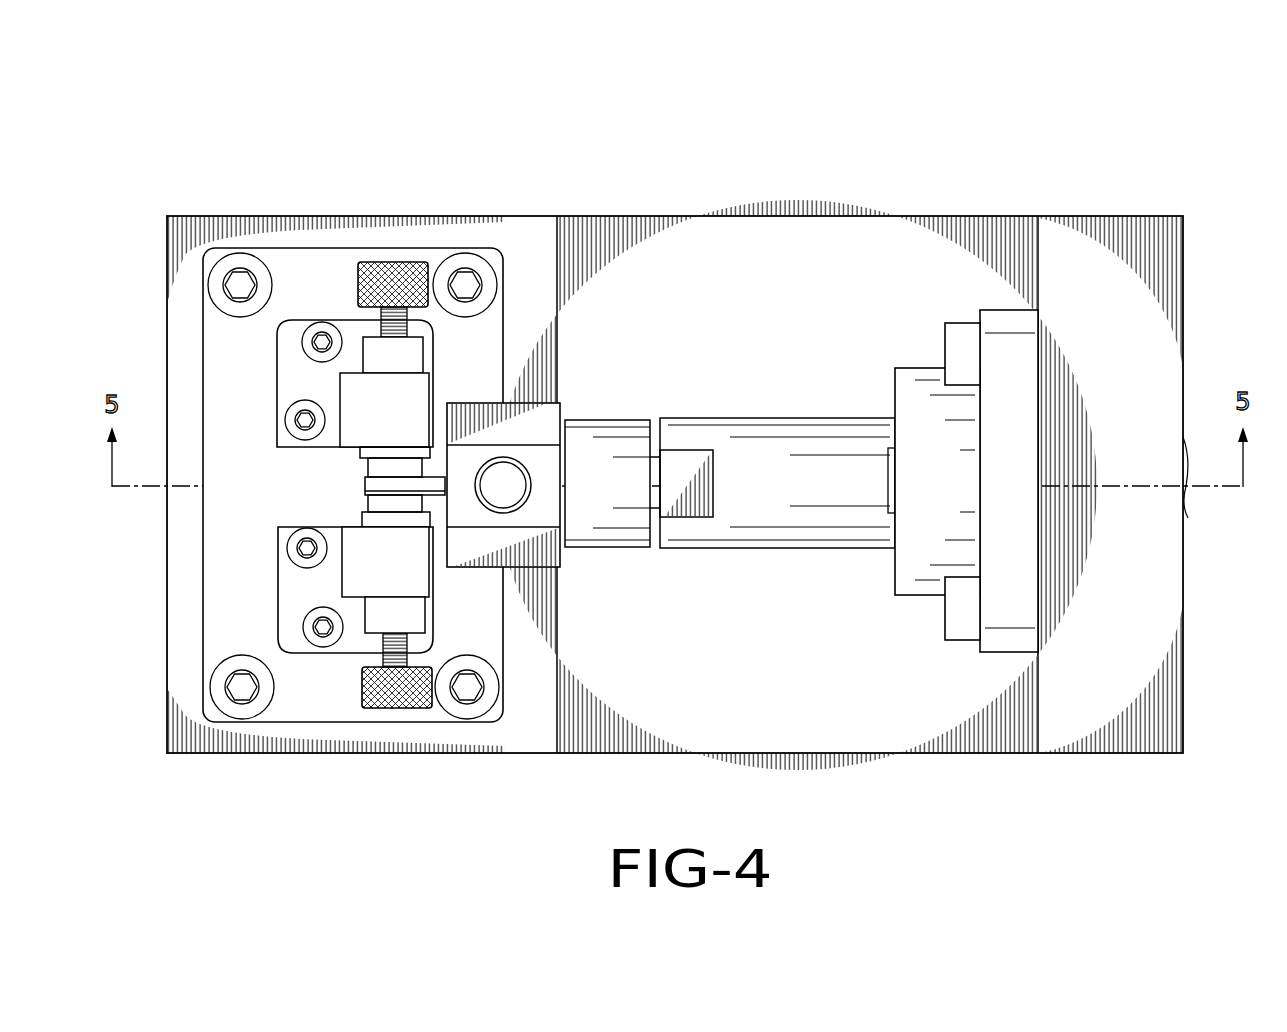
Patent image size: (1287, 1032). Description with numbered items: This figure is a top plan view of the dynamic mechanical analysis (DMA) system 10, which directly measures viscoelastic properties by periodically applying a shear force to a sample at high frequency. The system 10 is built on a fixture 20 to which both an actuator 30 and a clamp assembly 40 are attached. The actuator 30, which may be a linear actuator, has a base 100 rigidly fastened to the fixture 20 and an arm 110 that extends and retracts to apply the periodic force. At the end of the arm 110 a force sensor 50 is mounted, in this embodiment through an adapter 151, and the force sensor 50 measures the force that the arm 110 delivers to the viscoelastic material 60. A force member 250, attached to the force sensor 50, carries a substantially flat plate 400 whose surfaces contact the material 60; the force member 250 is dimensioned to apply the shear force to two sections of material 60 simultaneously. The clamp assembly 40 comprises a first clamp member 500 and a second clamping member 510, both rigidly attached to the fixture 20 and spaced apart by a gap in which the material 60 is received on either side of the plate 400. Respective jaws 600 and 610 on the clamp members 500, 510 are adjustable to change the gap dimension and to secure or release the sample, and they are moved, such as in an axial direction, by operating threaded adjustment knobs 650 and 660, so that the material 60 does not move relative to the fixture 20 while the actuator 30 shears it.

The dynamic mechanical analysis (DMA) system 10 is at (665, 453).
The fixture 20 is at (968, 754).
The actuator 30 is at (816, 416).
The clamp assembly 40 is at (379, 486).
The force sensor 50 is at (532, 432).
The viscoelastic material 60 is at (407, 467).
The base 100 is at (1020, 380).
The arm 110 is at (655, 473).
The adapter 151 is at (610, 533).
The force member 250 is at (362, 488).
The flat plate 400 is at (380, 478).
The first clamp member 500 is at (292, 357).
The second clamping member 510 is at (357, 582).
The jaw 600 is at (387, 448).
The jaw 610 is at (383, 520).
The threaded adjustment knob 650 is at (405, 267).
The threaded adjustment knob 660 is at (405, 706).